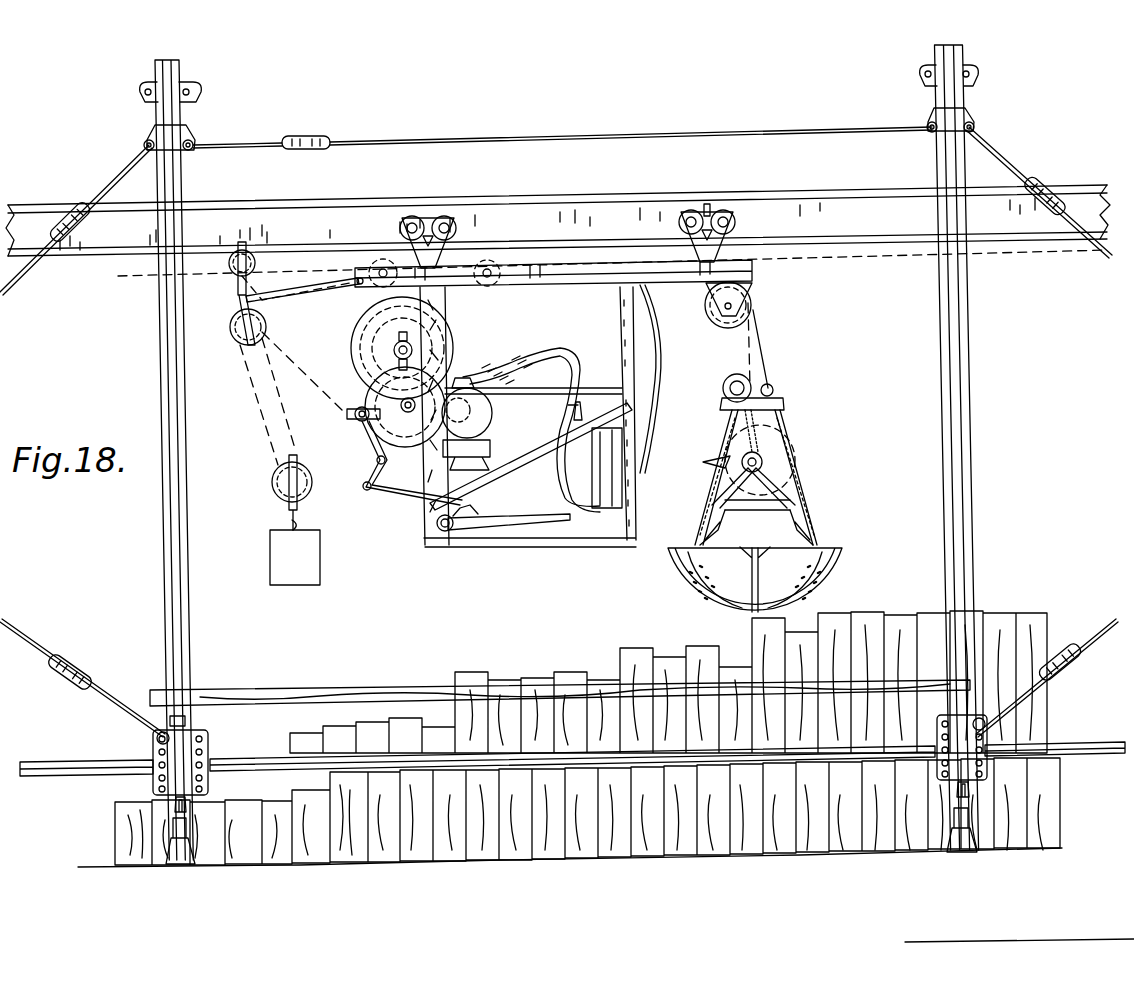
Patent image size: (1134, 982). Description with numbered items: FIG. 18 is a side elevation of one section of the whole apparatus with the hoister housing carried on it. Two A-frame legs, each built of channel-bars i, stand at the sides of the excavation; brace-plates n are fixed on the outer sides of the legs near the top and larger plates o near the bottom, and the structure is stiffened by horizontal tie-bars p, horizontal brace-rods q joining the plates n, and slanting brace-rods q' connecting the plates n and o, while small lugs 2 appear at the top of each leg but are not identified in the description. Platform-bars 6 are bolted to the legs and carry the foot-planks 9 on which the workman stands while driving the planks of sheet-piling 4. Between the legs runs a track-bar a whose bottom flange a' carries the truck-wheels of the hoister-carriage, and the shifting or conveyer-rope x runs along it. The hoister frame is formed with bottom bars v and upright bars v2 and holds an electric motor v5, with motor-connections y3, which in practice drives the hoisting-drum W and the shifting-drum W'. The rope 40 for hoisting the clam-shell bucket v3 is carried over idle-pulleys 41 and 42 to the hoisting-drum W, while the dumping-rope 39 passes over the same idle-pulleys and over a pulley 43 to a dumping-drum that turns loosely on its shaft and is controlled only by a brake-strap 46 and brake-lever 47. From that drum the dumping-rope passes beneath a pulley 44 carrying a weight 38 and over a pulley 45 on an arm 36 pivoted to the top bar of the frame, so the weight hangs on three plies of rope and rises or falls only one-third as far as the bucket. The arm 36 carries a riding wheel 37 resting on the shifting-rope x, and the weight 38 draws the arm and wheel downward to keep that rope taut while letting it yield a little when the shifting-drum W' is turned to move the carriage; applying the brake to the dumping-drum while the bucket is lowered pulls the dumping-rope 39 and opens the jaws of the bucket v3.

The attachment ears 2 is at (138, 95).
The brace-plates n is at (184, 130).
The horizontal brace-rods q is at (562, 124).
The brace-rods q' is at (559, 428).
The track-bar a is at (558, 220).
The bottom flange a' is at (593, 274).
The shifting-rope x is at (144, 283).
The channel-bars i is at (163, 540).
The pulley 43 is at (386, 262).
The bottom bars v is at (518, 548).
The idle-pulley 42 is at (497, 288).
The hoisting-drum W is at (424, 348).
The shifting-drum W' is at (374, 405).
The electric motor v5 is at (486, 424).
The motor-connections y3 is at (531, 404).
The brake-strap 46 is at (370, 455).
The brake-lever 47 is at (538, 512).
The upright bars v2 is at (653, 392).
The riding wheel 37 is at (282, 262).
The arm 36 is at (280, 296).
The pulley 45 is at (235, 335).
The dumping-rope 39 is at (366, 340).
The pulley 44 is at (302, 494).
The weight 38 is at (322, 552).
The idle-pulley 41 is at (752, 300).
The hoisting rope 40 is at (760, 352).
The clam-shell bucket v3 is at (755, 493).
The sheet-piling 4 is at (297, 735).
The foot-planks 9 is at (290, 690).
The tie-bars p is at (75, 762).
The plates o is at (208, 742).
The platform-bars 6 is at (170, 690).